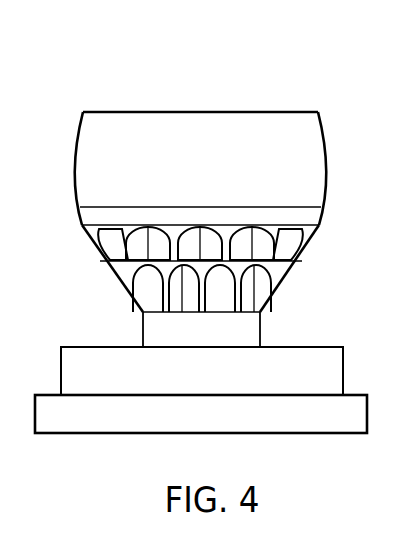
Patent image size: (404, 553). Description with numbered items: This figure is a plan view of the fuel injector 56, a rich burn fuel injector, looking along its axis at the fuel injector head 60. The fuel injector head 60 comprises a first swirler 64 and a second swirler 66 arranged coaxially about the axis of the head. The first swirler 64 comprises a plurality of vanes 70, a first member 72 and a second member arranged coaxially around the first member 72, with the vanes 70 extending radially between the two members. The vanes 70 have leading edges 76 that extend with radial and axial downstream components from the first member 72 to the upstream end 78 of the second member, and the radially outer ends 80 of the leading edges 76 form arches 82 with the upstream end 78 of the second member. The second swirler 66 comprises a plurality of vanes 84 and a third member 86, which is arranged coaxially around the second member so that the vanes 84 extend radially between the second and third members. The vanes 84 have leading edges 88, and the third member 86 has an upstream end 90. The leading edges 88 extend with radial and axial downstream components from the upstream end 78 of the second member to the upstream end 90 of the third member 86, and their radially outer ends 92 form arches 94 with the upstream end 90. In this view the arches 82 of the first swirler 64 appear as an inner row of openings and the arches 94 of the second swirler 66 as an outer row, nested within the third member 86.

The fuel injector 56 is at (240, 79).
The fuel injector head 60 is at (305, 106).
The third member 86 is at (327, 120).
The upstream end of the third member 90 is at (297, 213).
The leading edges of the second swirler vanes 88 is at (308, 236).
The first swirler 64 is at (304, 288).
The second swirler 66 is at (315, 253).
The vanes of the second swirler 84 is at (125, 250).
The arches of the second swirler 94 is at (200, 221).
The radially outer ends of the second swirler vane leading edges 92 is at (217, 222).
The vanes of the first swirler 70 is at (126, 286).
The upstream end of the second member 78 is at (126, 281).
The radially outer ends of the first swirler vane leading edges 80 is at (226, 282).
The leading edges of the first swirler vanes 76 is at (142, 311).
The arches of the first swirler 82 is at (262, 304).
The first member 72 is at (122, 253).